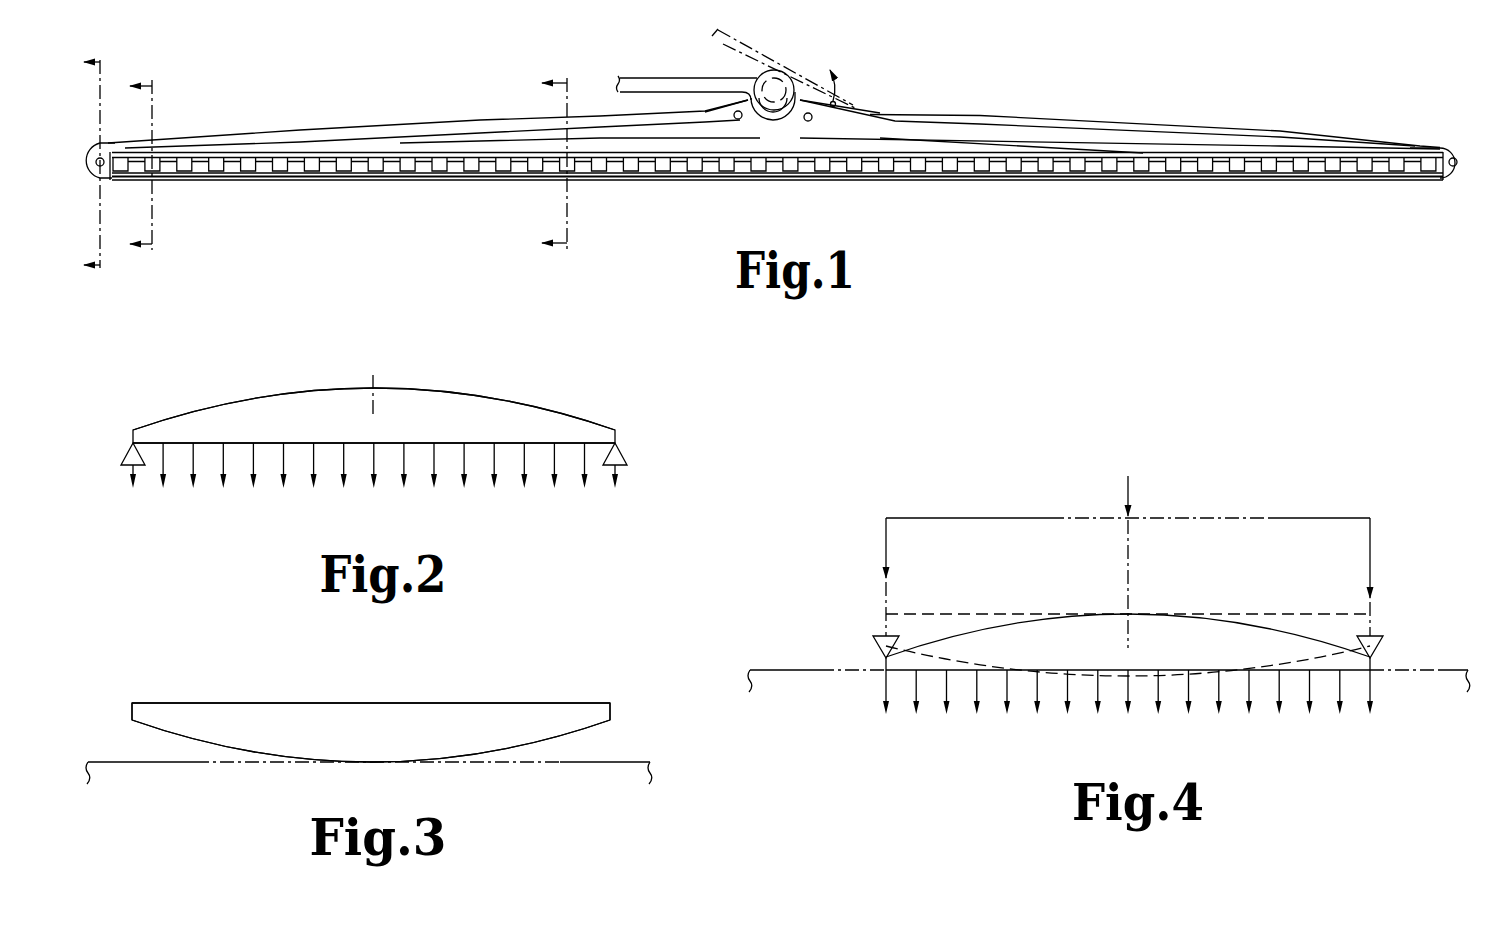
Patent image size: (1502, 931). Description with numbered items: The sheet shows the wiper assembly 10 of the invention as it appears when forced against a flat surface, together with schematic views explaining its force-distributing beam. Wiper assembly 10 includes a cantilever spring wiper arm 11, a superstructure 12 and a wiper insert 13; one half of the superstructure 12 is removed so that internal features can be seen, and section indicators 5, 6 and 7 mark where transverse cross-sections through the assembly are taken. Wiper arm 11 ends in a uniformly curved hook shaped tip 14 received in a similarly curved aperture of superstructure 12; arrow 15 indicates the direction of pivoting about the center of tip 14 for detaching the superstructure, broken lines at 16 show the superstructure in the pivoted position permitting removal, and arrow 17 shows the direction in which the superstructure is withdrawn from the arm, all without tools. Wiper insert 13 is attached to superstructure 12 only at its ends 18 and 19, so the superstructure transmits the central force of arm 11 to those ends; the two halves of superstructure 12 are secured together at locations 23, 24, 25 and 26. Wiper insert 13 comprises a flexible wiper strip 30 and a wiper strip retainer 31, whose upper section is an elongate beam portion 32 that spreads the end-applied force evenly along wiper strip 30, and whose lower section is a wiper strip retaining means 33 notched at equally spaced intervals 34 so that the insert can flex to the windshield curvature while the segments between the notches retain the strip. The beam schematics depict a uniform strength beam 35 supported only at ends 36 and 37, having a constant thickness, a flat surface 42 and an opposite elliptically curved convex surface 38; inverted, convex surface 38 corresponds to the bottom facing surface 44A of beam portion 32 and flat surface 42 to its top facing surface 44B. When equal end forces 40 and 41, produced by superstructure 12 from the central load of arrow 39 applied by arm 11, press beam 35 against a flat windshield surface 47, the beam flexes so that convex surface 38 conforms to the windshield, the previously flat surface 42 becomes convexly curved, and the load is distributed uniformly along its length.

In FIG. 1, the section line 5- 5 is at (561, 165).
In FIG. 1, the section line 6- 6 is at (148, 165).
In FIG. 1, the section line 7- 7 is at (98, 163).
In FIG. 1, the wiper assembly 10 is at (988, 84).
In FIG. 1, the cantilever spring wiper arm 11 is at (650, 79).
In FIG. 1, the superstructure 12 is at (543, 118).
In FIG. 1, the wiper insert 13 is at (556, 173).
In FIG. 1, the hook shaped tip 14 is at (782, 119).
In FIG. 1, the arrow 15 is at (833, 84).
In FIG. 1, the pivoted superstructure portion 16 is at (728, 49).
In FIG. 1, the arrow 17 is at (790, 60).
In FIG. 1, the end 18 is at (109, 142).
In FIG. 1, the end 19 is at (1440, 147).
In FIG. 1, the securing location 23 is at (103, 166).
In FIG. 1, the securing location 24 is at (735, 120).
In FIG. 1, the securing location 25 is at (896, 122).
In FIG. 1, the securing location 26 is at (1455, 167).
In FIG. 1, the flexible wiper strip 30 is at (775, 117).
In FIG. 1, the wiper strip retainer 31 is at (683, 146).
In FIG. 1, the elongate beam portion 32 is at (648, 150).
In FIG. 1, the wiper strip retaining means 33 is at (839, 176).
In FIG. 1, the notched intervals 34 is at (1030, 166).
In FIG. 2, the uniform strength beam 35 is at (257, 413).
In FIG. 3, the uniform strength beam 35 is at (250, 738).
In FIG. 2, the end 36 is at (133, 430).
In FIG. 3, the end 36 is at (132, 713).
In FIG. 4, the end 36 is at (885, 668).
In FIG. 2, the end 37 is at (615, 430).
In FIG. 3, the end 37 is at (611, 715).
In FIG. 4, the end 37 is at (1372, 668).
In FIG. 2, the convex surface 38 is at (338, 388).
In FIG. 3, the convex surface 38 is at (190, 738).
In FIG. 4, the convex surface 38 is at (995, 680).
In FIG. 4, the arrow 39 is at (1131, 488).
In FIG. 4, the force 40 is at (886, 550).
In FIG. 4, the force 41 is at (1370, 568).
In FIG. 2, the flat surface 42 is at (503, 443).
In FIG. 3, the flat surface 42 is at (215, 703).
In FIG. 4, the flat surface 42 is at (1027, 620).
In FIG. 1, the bottom facing surface 44A is at (1143, 153).
In FIG. 1, the top facing surface 44B is at (1090, 140).
In FIG. 4, the windshield surface 47 is at (1436, 672).